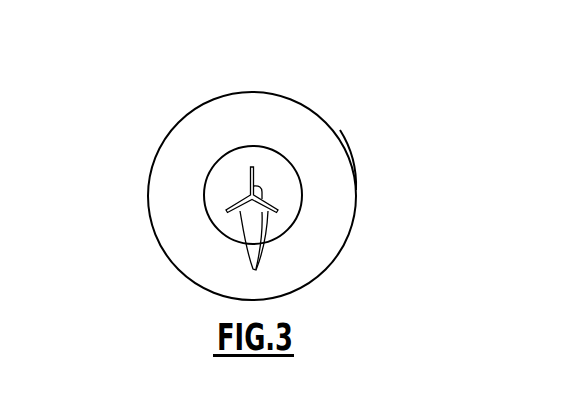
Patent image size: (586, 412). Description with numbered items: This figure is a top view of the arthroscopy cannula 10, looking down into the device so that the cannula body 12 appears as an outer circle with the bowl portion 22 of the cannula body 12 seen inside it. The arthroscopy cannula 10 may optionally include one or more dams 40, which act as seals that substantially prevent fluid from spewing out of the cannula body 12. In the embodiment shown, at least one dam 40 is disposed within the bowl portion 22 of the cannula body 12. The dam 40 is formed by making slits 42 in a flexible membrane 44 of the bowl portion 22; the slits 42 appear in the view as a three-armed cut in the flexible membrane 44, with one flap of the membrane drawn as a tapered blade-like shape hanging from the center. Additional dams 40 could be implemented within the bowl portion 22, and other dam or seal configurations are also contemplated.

The arthroscopy cannula 10 is at (150, 120).
The cannula body 12 is at (221, 90).
The bowl portion 22 is at (362, 184).
The dam 40 is at (205, 234).
The slits 42 is at (268, 266).
The flexible membrane 44 is at (283, 187).